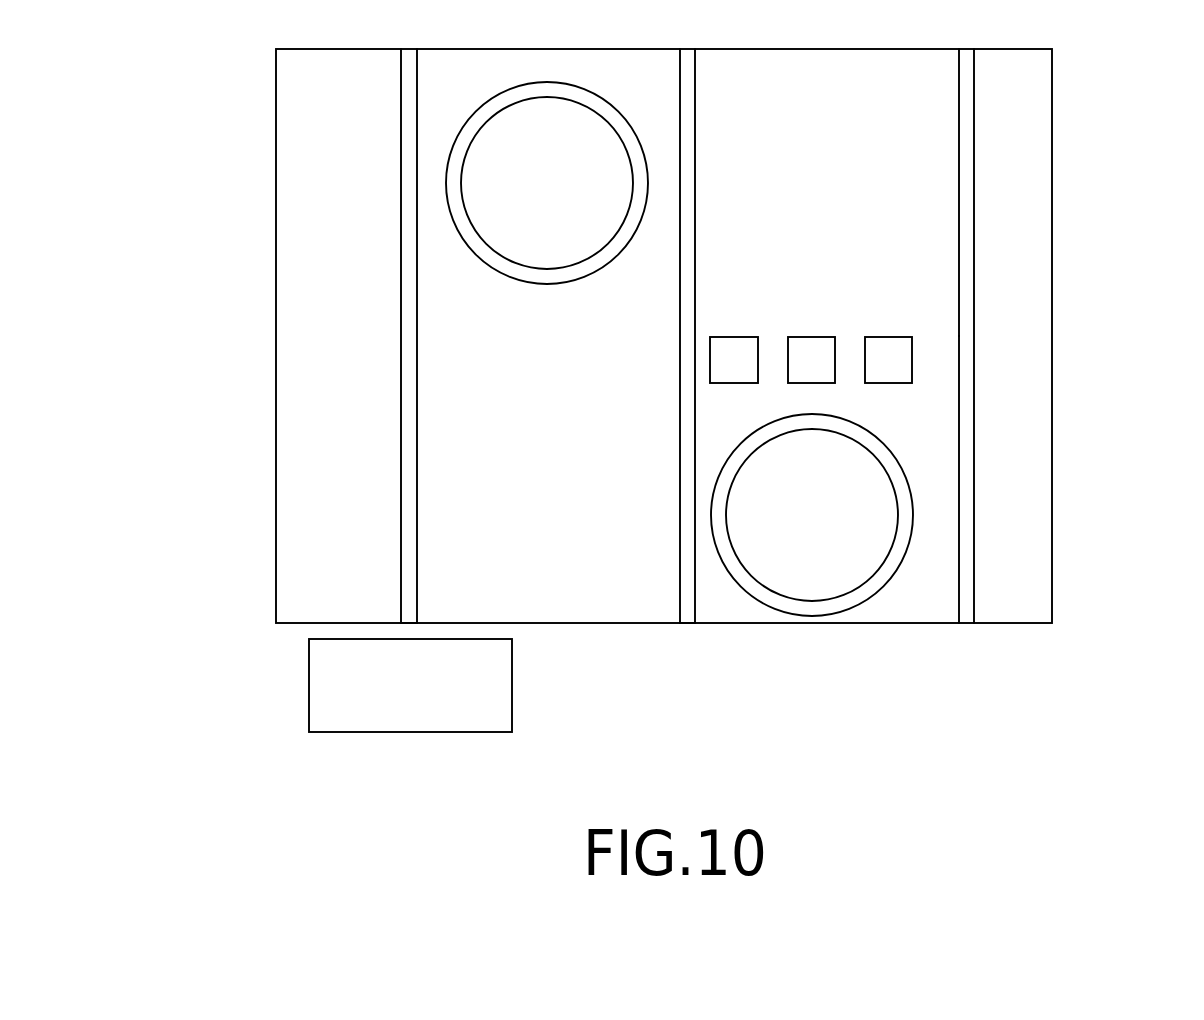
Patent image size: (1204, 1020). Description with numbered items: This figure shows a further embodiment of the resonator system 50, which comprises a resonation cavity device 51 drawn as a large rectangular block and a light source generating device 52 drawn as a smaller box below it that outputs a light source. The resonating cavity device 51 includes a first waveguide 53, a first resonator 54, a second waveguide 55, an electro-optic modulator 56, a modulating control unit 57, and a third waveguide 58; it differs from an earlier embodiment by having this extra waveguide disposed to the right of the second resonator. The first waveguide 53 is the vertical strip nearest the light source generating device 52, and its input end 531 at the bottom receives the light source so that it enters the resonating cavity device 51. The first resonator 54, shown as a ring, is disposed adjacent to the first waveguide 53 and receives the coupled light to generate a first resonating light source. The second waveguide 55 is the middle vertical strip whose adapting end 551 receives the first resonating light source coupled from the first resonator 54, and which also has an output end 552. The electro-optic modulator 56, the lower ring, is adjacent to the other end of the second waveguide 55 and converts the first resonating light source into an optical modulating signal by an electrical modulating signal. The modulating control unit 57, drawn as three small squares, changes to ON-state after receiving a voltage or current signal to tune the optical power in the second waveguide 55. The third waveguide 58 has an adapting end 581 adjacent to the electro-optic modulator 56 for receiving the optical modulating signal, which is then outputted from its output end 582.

The resonator system 50 is at (1174, 770).
The resonation cavity device 51 is at (273, 247).
The light source generating device 52 is at (312, 693).
The first waveguide 53 is at (407, 383).
The input end 531 is at (412, 608).
The first resonator 54 is at (497, 268).
The second waveguide 55 is at (695, 272).
The adapting end 551 is at (695, 177).
The output end 552 is at (690, 608).
The electro-optic modulator 56 is at (843, 600).
The modulating control unit 57 is at (897, 367).
The third waveguide 58 is at (974, 288).
The adapting end 581 is at (960, 522).
The output end 582 is at (967, 93).